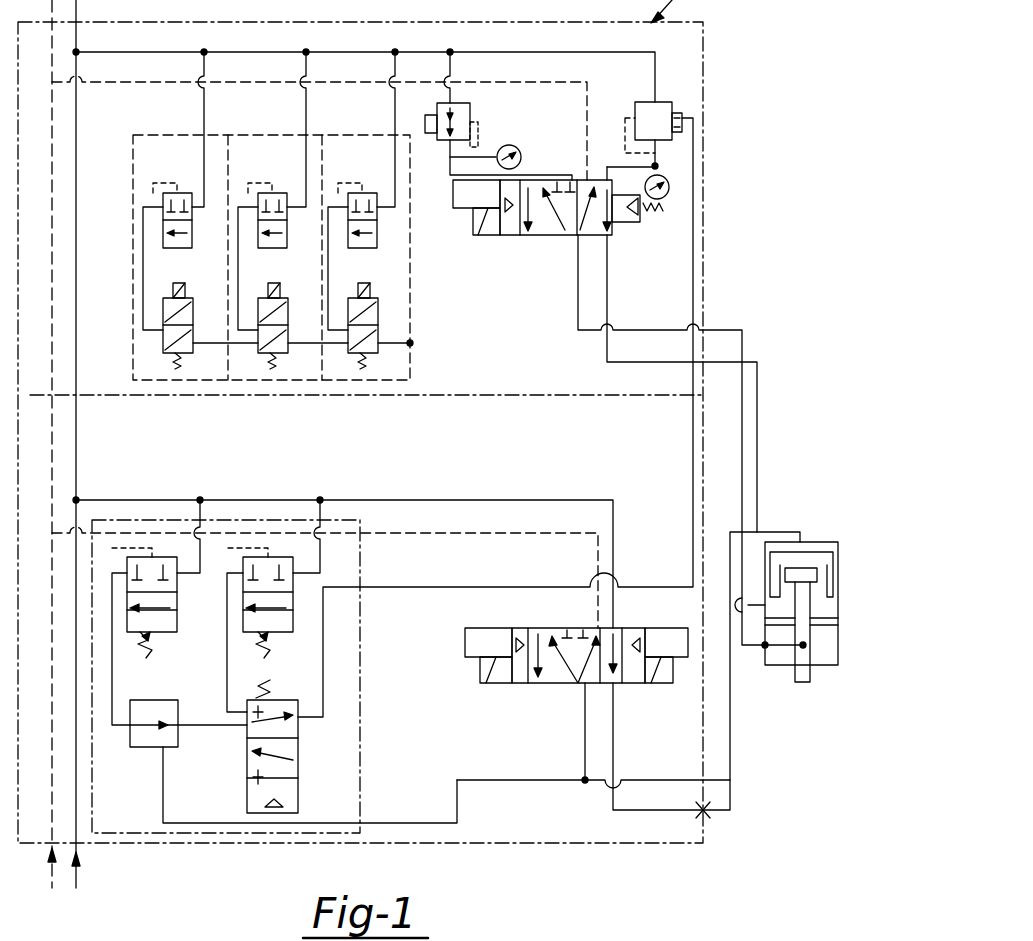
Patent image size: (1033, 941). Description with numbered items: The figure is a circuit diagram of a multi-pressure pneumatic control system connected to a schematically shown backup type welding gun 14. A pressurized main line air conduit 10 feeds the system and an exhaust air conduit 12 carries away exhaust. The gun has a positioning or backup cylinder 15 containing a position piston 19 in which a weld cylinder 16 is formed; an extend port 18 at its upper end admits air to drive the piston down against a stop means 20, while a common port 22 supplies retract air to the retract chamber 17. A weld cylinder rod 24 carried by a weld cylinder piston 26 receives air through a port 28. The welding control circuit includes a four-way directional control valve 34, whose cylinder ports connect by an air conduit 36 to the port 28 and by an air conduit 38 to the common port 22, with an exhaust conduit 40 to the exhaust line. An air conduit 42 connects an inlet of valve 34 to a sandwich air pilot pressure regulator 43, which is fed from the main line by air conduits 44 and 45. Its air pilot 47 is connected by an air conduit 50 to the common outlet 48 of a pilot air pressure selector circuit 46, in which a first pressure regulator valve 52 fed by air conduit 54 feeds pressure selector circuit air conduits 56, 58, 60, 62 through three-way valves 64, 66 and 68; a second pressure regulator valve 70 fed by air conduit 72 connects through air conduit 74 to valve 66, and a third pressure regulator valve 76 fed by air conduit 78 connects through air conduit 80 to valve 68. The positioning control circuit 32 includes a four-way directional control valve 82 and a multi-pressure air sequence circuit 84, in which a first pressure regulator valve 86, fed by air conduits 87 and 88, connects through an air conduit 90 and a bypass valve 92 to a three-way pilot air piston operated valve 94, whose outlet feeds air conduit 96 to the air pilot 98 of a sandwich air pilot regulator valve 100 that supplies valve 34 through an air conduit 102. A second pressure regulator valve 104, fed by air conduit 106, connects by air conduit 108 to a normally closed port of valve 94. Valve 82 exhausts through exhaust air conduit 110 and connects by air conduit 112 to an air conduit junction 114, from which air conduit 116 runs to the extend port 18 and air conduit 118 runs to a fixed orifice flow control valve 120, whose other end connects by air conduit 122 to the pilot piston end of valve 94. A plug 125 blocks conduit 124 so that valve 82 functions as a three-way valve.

The pressurized main line air conduit 10 is at (78, 840).
The exhaust air conduit 12 is at (58, 852).
The backup type welding gun 14 is at (825, 668).
The positioning or backup cylinder 15 is at (833, 603).
The weld cylinder 16 is at (818, 575).
The retract chamber 17 is at (838, 645).
The extend port 18 is at (795, 542).
The position piston 19 is at (828, 562).
The stop means 20 is at (825, 622).
The common port 22 is at (780, 660).
The weld cylinder rod 24 is at (805, 684).
The weld cylinder piston 26 is at (812, 568).
The port 28 is at (765, 648).
The air pressure circuit 32 is at (690, 845).
The four-way directional control valve 34 is at (483, 238).
The air conduit 36 is at (574, 322).
The air conduit 38 is at (608, 282).
The exhaust conduit 40 is at (537, 88).
The air conduit 42 is at (522, 178).
The sandwich air pilot pressure regulator 43 is at (470, 112).
The air conduit 44 is at (455, 66).
The air conduit 45 is at (436, 58).
The pilot air pressure selector circuit 46 is at (186, 128).
The air pilot 47 is at (432, 118).
The common outlet 48 is at (412, 346).
The air conduit 50 is at (412, 298).
The first pressure regulator valve 52 is at (176, 253).
The air conduit 54 is at (205, 128).
The pressure selector circuit air conduit 56 is at (143, 282).
The pressure selector circuit air conduit 58 is at (194, 368).
The pressure selector circuit air conduit 60 is at (289, 368).
The pressure selector circuit air conduit 62 is at (380, 368).
The three-way valve 64 is at (157, 312).
The three-way control valve 66 is at (288, 308).
The three-way control valve 68 is at (378, 308).
The second pressure regulator valve 70 is at (290, 192).
The air conduit 72 is at (306, 104).
The air conduit 74 is at (238, 290).
The third pressure regulator valve 76 is at (380, 192).
The air conduit 78 is at (393, 128).
The air conduit 80 is at (356, 278).
The four-way directional control valve 82 is at (505, 688).
The multi-pressure air sequence circuit 84 is at (365, 702).
The first pressure regulator valve 86 is at (178, 633).
The air conduit 87 is at (178, 572).
The air conduit 88 is at (372, 502).
The air conduit 90 is at (112, 660).
The bypass valve 92 is at (152, 758).
The three-way pilot air piston operated valve 94 is at (240, 786).
The air conduit 96 is at (432, 588).
The air pilot 98 is at (684, 118).
The sandwich air pilot regulator valve 100 is at (645, 102).
The air conduit 102 is at (657, 167).
The second pressure regulator valve 104 is at (294, 633).
The air conduit 106 is at (330, 538).
The air conduit 108 is at (227, 688).
The exhaust air conduit 110 is at (493, 536).
The air conduit 112 is at (582, 736).
The air conduit junction 114 is at (585, 790).
The air conduit 116 is at (619, 782).
The air conduit 118 is at (535, 792).
The fixed orifice flow control valve 120 is at (532, 770).
The air conduit 122 is at (456, 783).
The conduit 124 is at (615, 728).
The plug 125 is at (712, 811).